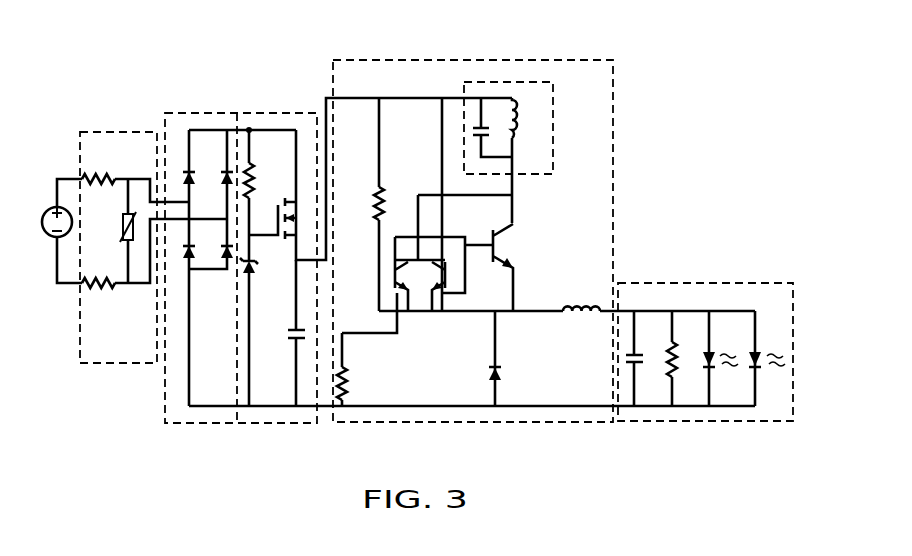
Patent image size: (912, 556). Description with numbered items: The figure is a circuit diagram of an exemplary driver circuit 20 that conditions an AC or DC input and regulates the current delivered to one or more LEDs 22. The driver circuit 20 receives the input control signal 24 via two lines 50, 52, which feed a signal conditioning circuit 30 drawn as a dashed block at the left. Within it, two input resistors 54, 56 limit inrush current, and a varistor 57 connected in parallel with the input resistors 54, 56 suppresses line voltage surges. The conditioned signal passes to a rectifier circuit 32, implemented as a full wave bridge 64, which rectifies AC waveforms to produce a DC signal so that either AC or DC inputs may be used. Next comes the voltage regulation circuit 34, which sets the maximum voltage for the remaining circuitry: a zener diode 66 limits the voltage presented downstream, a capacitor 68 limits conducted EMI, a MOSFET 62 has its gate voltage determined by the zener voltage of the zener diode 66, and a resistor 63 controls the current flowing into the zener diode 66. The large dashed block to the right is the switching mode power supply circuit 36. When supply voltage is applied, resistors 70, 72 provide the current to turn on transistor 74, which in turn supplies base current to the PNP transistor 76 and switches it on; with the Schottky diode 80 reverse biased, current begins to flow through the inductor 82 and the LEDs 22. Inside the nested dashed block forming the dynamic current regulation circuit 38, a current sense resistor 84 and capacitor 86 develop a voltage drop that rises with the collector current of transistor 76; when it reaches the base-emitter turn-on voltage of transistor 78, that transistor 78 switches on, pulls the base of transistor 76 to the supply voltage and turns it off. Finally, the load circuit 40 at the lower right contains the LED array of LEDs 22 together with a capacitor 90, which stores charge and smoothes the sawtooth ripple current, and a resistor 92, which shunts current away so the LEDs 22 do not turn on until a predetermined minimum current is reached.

The driver circuit 20 is at (690, 75).
The LEDs 22 is at (755, 368).
The control signal 24 is at (43, 211).
The signal conditioning circuit 30 is at (117, 132).
The rectifier circuit 32 is at (200, 112).
The voltage regulation circuit 34 is at (278, 112).
The switching mode power supply circuit 36 is at (482, 60).
The dynamic current regulation circuit 38 is at (507, 82).
The load circuit 40 is at (708, 283).
The line 50 is at (72, 178).
The line 52 is at (55, 262).
The input resistor 54 is at (100, 170).
The input resistor 56 is at (96, 290).
The varistor 57 is at (134, 244).
The MOSFET 62 is at (286, 203).
The resistor 63 is at (256, 186).
The full wave bridge 64 is at (239, 266).
The zener diode 66 is at (256, 268).
The capacitor 68 is at (290, 342).
The resistor 70 is at (374, 196).
The resistor 72 is at (348, 370).
The transistor 74 is at (393, 273).
The PNP transistor 76 is at (512, 230).
The transistor 78 is at (432, 292).
The Schottky diode 80 is at (490, 373).
The inductor 82 is at (580, 320).
The current sense resistor 84 is at (517, 122).
The capacitor 86 is at (487, 138).
The capacitor 90 is at (638, 364).
The resistor 92 is at (682, 347).